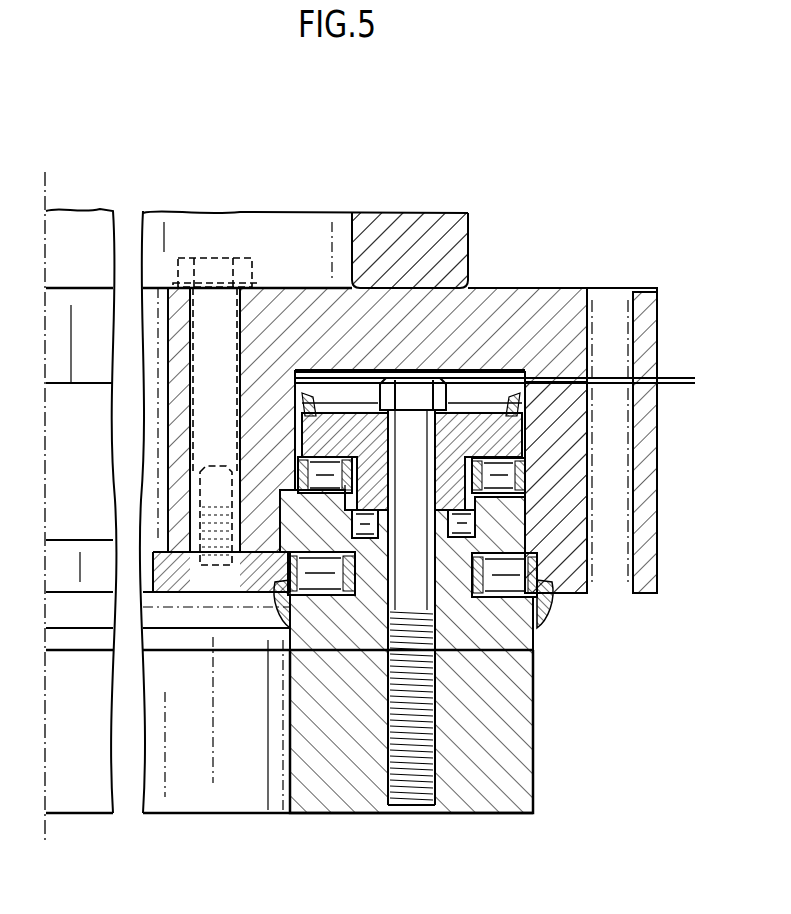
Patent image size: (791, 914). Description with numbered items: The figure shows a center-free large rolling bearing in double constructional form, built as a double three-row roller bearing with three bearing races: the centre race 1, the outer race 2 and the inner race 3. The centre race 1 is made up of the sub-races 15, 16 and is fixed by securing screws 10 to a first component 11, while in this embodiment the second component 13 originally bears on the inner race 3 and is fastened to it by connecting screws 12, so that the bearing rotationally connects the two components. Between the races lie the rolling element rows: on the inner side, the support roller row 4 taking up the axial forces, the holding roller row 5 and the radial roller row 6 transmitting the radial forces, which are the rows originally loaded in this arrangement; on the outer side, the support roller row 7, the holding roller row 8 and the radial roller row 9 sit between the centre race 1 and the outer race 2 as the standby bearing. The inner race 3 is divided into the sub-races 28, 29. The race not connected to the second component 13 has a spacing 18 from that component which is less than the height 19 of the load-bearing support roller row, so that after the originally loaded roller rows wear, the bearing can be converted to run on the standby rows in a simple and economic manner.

The centre race 1 is at (470, 623).
The outer race 2 is at (660, 463).
The inner race 3 is at (148, 527).
The support roller row 4 is at (297, 620).
The holding roller row 5 is at (313, 477).
The radial roller row 6 is at (352, 523).
The support roller row 7 is at (537, 635).
The holding roller row 8 is at (508, 472).
The radial roller row 9 is at (465, 522).
The securing screw 10 is at (440, 382).
The first component 11 is at (358, 760).
The connecting screw 12 is at (210, 258).
The second component 13 is at (410, 245).
The sub-race 15 is at (320, 432).
The sub-race 16 is at (343, 627).
The spacing 18 is at (688, 348).
The height 19 is at (377, 556).
The sub-race 28 is at (257, 503).
The sub-race 29 is at (165, 573).